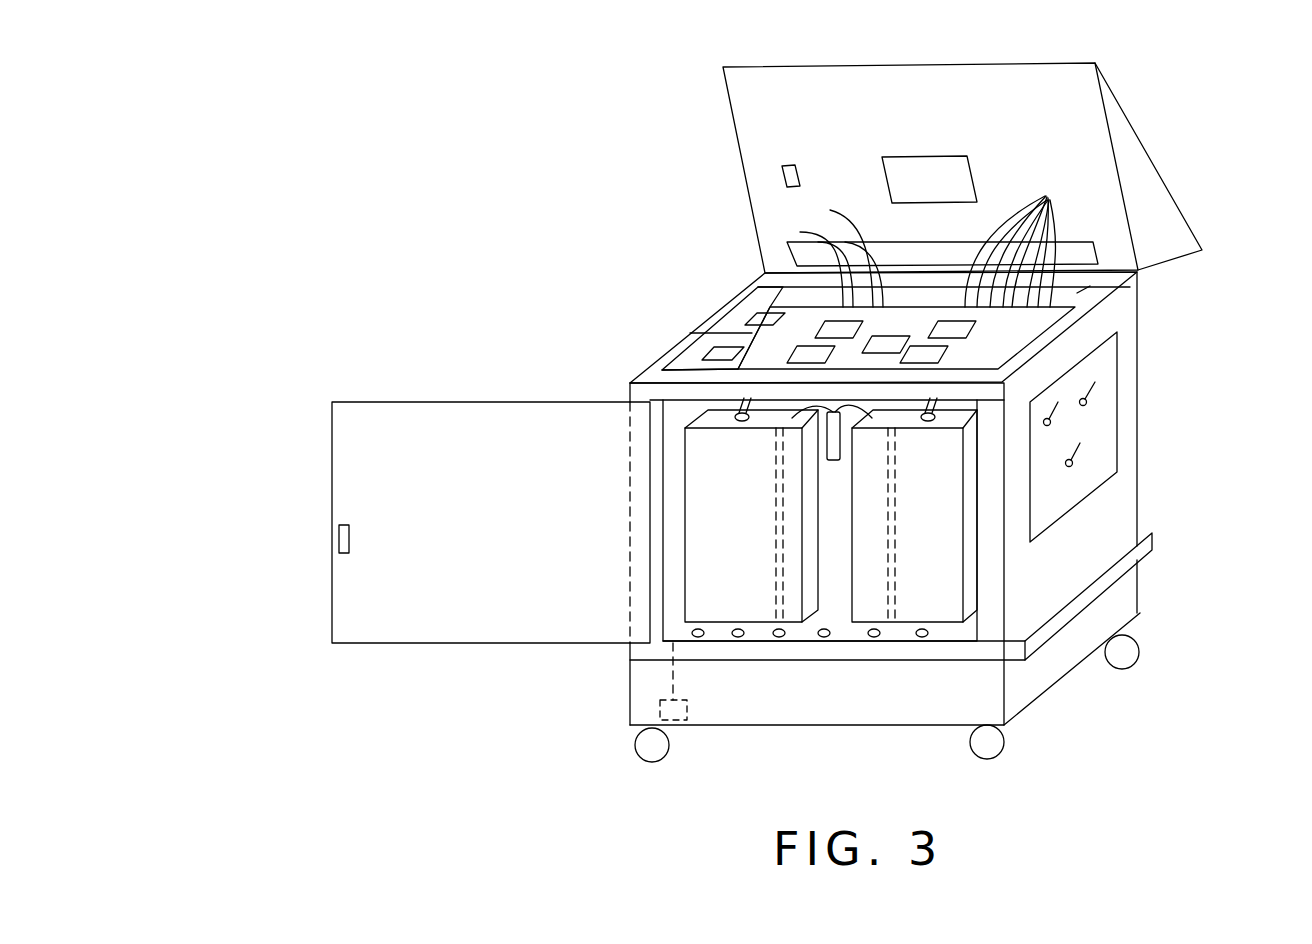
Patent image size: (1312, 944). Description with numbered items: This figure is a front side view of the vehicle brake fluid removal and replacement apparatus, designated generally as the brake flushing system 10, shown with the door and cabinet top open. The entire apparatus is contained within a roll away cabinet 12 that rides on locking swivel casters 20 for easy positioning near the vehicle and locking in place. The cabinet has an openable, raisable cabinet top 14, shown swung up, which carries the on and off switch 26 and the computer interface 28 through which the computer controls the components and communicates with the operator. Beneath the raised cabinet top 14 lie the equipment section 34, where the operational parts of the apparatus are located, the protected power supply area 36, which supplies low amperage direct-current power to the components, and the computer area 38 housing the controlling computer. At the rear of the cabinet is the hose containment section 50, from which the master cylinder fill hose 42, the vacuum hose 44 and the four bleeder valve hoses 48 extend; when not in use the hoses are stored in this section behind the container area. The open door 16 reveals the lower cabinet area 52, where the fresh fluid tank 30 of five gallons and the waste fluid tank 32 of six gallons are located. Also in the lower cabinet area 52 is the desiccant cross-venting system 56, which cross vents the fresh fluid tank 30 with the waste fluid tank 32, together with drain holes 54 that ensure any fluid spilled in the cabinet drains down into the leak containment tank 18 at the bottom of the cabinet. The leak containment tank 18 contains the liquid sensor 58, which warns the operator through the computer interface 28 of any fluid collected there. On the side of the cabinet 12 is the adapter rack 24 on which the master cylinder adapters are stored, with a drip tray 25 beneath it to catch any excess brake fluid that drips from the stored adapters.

The brake flushing system 10 is at (538, 249).
The roll away cabinet 12 is at (1117, 527).
The cabinet top 14 is at (1160, 217).
The door 16 is at (378, 510).
The leak containment tank 18 is at (748, 698).
The locking swivel casters 20 is at (996, 745).
The adapter rack 24 is at (1100, 430).
The drip tray 25 is at (1127, 597).
The on and off switch 26 is at (783, 163).
The computer interface 28 is at (943, 173).
The fresh fluid tank 30 is at (943, 590).
The waste fluid tank 32 is at (705, 562).
The equipment section 34 is at (1018, 330).
The protected power supply area 36 is at (748, 318).
The computer area 38 is at (697, 357).
The master cylinder fill hose 42 is at (800, 232).
The vacuum hose 44 is at (830, 210).
The bleeder valve hoses 48 is at (1047, 193).
The hose containment section 50 is at (1077, 293).
The lower cabinet area 52 is at (673, 532).
The drain holes 54 is at (828, 637).
The desiccant cross-venting system 56 is at (827, 447).
The liquid sensor 58 is at (660, 702).